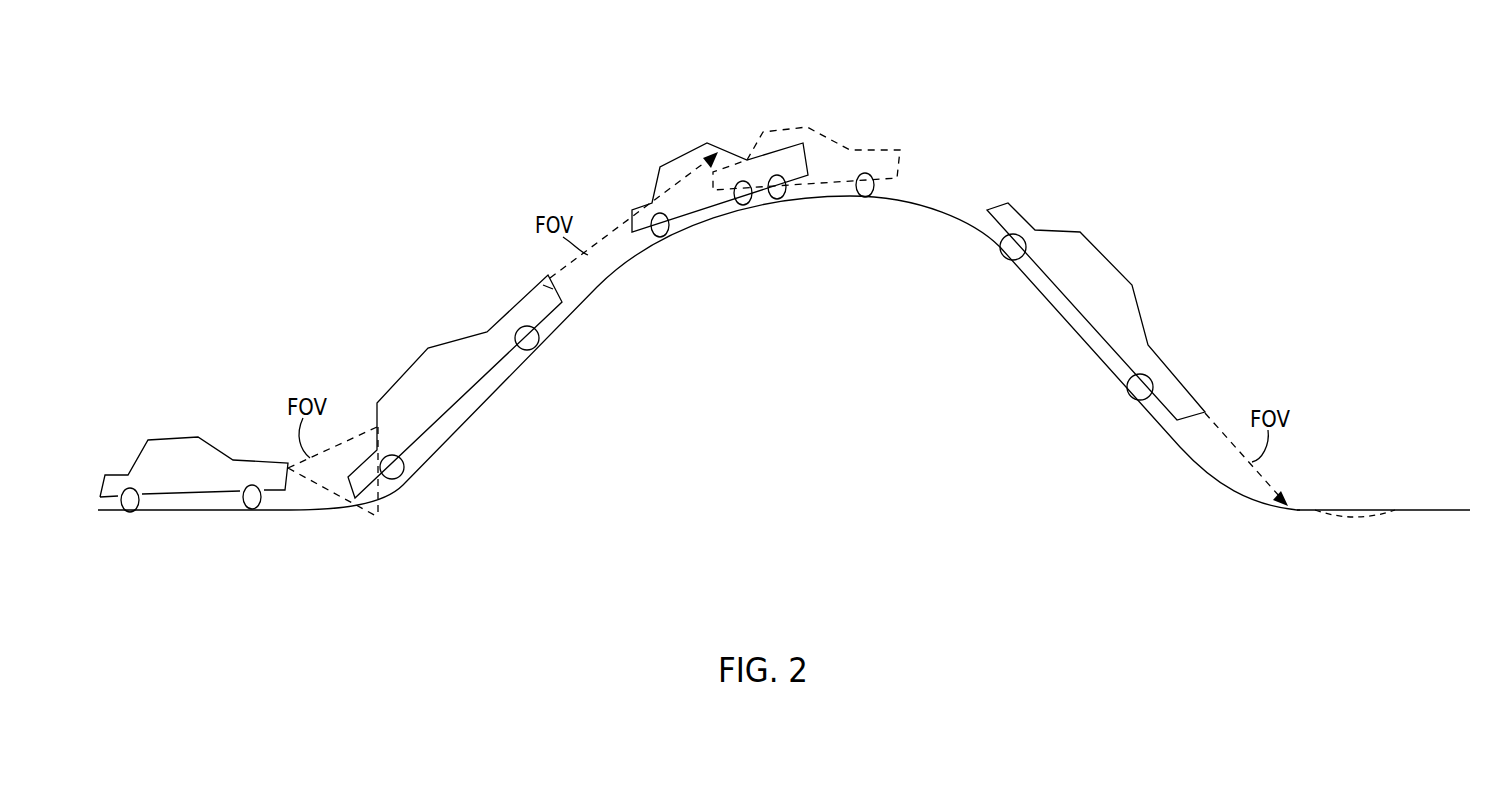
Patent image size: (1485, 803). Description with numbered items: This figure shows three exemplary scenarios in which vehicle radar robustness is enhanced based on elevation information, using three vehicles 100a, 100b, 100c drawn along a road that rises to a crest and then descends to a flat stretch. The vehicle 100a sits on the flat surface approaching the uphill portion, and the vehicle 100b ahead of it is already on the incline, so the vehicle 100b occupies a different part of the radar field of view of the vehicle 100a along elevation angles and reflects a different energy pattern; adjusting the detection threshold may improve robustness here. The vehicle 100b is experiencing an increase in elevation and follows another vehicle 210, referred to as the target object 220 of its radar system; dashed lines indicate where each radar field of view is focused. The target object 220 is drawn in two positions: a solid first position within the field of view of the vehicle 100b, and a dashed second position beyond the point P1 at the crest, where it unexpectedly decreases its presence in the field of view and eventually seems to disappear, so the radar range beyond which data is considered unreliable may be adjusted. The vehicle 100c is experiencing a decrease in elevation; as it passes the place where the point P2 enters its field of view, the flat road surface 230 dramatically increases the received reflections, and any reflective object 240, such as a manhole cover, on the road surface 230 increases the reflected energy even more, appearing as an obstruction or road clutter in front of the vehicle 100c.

The vehicle 100a is at (175, 435).
The vehicle 100b is at (512, 307).
The vehicle 100c is at (1093, 247).
The another vehicle 210 is at (660, 167).
The target object 220 is at (870, 152).
The flat road surface 230 is at (1300, 496).
The reflective object 240 is at (1363, 515).
The point P1 is at (734, 240).
The point P2 is at (1262, 530).